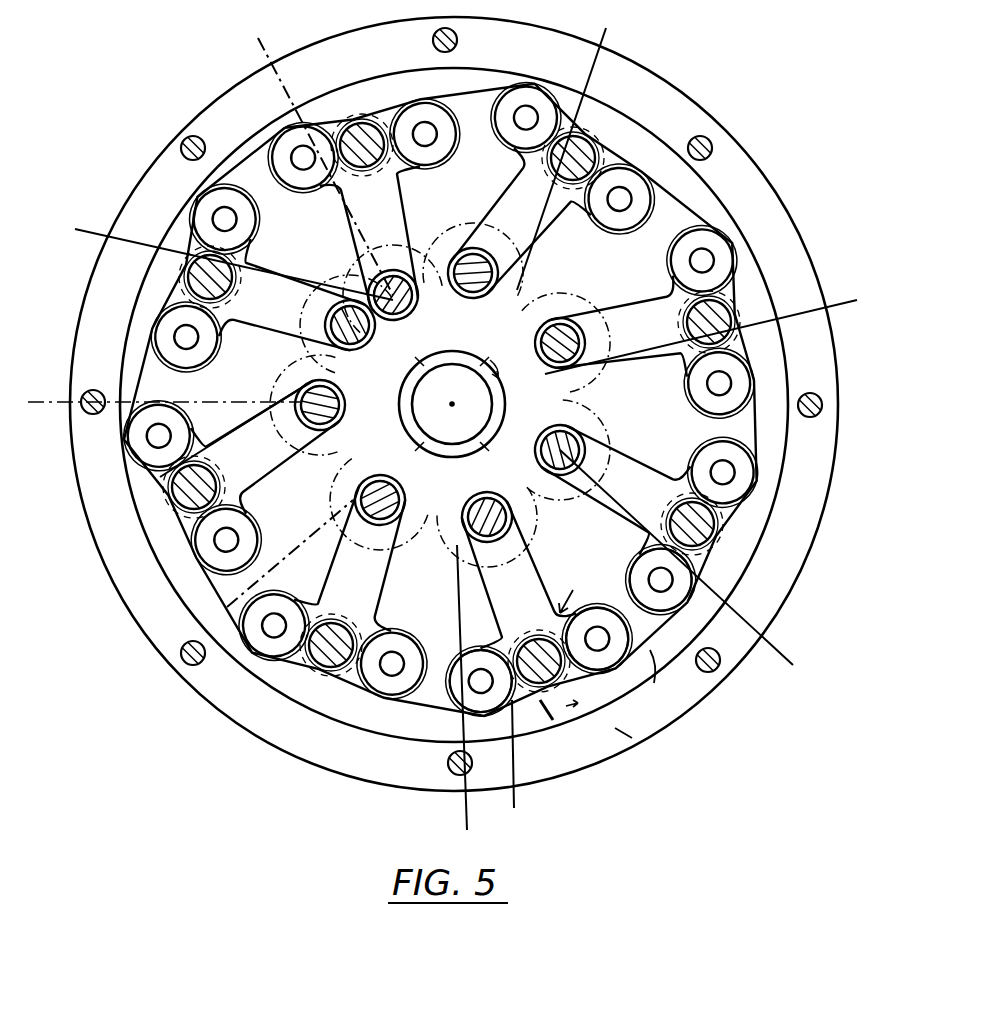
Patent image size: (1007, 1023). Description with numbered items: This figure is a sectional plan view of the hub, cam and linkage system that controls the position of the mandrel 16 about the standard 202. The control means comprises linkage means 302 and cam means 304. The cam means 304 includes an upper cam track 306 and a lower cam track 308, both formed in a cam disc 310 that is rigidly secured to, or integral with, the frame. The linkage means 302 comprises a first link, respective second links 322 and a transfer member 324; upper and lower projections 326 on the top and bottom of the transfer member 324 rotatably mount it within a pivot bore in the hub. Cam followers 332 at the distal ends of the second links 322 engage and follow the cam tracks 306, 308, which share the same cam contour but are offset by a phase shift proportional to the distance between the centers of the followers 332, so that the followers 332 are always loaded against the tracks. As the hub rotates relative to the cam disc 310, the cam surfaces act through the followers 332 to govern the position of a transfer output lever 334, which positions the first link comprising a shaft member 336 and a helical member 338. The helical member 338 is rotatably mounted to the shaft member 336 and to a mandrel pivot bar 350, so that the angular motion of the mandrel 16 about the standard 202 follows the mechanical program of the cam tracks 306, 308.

The mandrel 16 is at (606, 30).
The standard 202 is at (458, 352).
The linkage means 302 is at (553, 702).
The cam means 304 is at (740, 420).
The upper cam track 306 is at (654, 683).
The lower cam track 308 is at (632, 738).
The cam disc 310 is at (820, 487).
The second links 322 is at (470, 828).
The transfer member 324 is at (593, 618).
The upper and lower projections 326 is at (258, 255).
The cam followers 332 is at (262, 224).
The transfer output lever 334 is at (632, 570).
The shaft member 336 is at (333, 386).
The helical member 338 is at (415, 255).
The mandrel pivot bar 350 is at (446, 646).